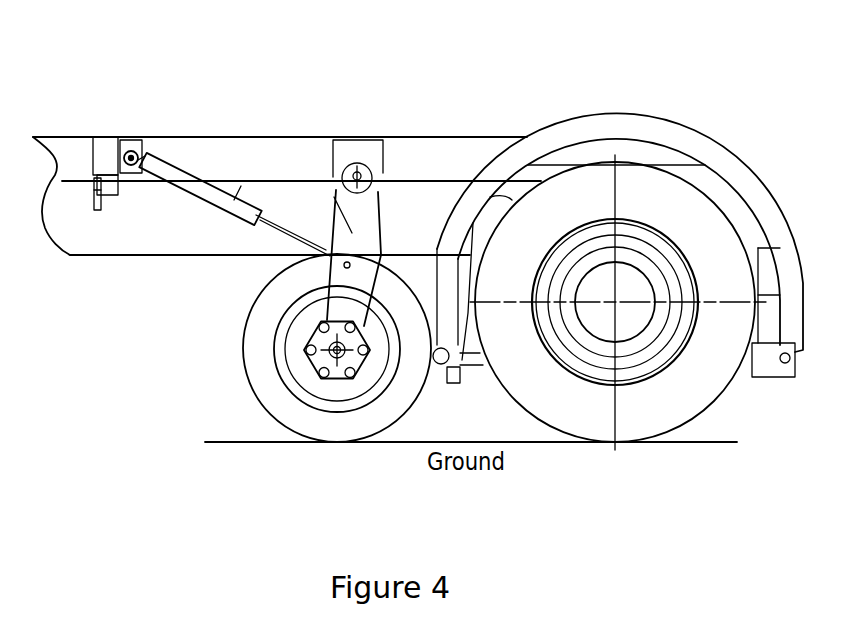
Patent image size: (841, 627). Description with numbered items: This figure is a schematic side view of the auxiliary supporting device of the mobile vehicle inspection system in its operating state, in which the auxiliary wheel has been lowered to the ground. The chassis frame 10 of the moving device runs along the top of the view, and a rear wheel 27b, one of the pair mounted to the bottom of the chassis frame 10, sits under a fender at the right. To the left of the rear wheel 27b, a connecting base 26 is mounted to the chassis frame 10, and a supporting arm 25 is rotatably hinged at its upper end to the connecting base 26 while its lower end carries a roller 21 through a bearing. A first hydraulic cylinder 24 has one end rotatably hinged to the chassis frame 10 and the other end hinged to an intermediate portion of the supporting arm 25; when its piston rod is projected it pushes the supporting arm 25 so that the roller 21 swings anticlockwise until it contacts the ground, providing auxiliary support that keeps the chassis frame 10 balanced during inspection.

The chassis frame 10 is at (438, 155).
The roller 21 is at (268, 377).
The first hydraulic cylinder 24 is at (205, 197).
The supporting arm 25 is at (345, 232).
The connecting base 26 is at (355, 143).
The rear wheels 27b is at (671, 410).